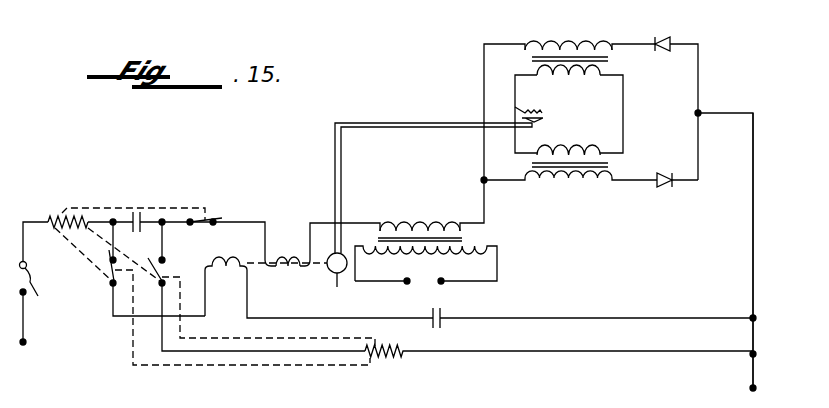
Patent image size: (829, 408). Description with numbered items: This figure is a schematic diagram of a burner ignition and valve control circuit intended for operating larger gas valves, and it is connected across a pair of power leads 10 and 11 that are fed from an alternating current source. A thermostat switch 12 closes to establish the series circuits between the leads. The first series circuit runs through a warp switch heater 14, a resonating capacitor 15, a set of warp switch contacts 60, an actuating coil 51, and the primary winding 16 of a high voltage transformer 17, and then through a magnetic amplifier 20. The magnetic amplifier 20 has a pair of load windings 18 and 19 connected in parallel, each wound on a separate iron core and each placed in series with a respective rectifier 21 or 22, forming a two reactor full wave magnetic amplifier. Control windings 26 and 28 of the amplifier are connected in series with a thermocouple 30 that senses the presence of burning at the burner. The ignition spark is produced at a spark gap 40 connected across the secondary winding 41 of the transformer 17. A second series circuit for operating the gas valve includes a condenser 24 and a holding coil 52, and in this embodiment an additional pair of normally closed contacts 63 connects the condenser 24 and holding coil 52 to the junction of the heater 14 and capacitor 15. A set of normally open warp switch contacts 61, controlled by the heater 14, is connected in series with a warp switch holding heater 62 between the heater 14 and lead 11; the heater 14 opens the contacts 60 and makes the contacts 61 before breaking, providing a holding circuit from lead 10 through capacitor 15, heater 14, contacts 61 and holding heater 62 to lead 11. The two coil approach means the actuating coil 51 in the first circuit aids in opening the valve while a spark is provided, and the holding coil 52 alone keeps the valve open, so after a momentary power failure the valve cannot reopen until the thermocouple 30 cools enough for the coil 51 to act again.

The power lead 10 is at (23, 329).
The power lead 11 is at (753, 245).
The thermostat switch 12 is at (37, 293).
The warp switch heater 14 is at (62, 213).
The resonating capacitor 15 is at (135, 211).
The primary winding 16 is at (443, 200).
The high voltage transformer 17 is at (468, 237).
The load winding 18 is at (591, 42).
The load winding 19 is at (583, 186).
The magnetic amplifier 20 is at (472, 117).
The rectifier 21 is at (675, 41).
The rectifier 22 is at (669, 190).
The condenser 24 is at (445, 312).
The control winding 26 is at (571, 82).
The control winding 28 is at (572, 150).
The thermocouple 30 is at (540, 110).
The spark gap 40 is at (416, 286).
The secondary winding 41 is at (497, 247).
The actuation aid coil 51 is at (284, 260).
The holding coil 52 is at (226, 272).
The warp switch contacts 60 is at (213, 218).
The warp switch contacts 61 is at (163, 280).
The warp switch holding heater 62 is at (390, 357).
The normally closed contacts 63 is at (113, 283).